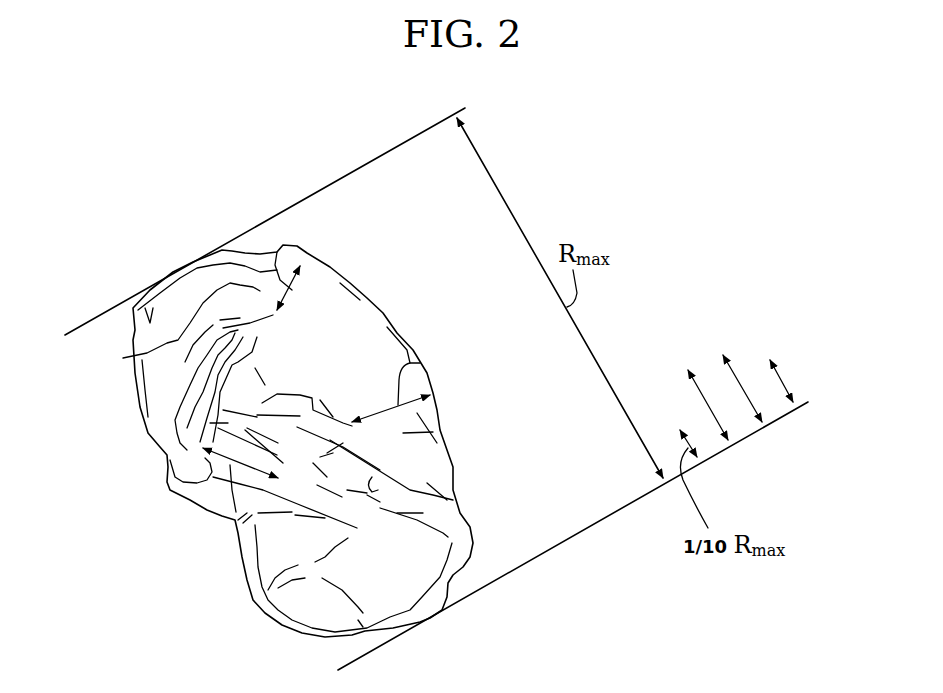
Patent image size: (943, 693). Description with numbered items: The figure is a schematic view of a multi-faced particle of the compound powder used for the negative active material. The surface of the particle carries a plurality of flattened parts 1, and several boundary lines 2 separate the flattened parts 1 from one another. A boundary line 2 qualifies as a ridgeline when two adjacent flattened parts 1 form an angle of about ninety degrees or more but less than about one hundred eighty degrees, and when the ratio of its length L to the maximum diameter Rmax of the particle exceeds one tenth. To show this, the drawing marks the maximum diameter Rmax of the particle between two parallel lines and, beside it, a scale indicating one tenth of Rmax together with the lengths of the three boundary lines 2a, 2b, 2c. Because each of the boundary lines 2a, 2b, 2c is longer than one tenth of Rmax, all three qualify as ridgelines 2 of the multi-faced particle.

The flattened part 1 is at (195, 332).
The boundary line 2 is at (450, 400).
The boundary line 2a is at (420, 363).
The boundary line 2b is at (230, 520).
The boundary line 2c is at (290, 247).